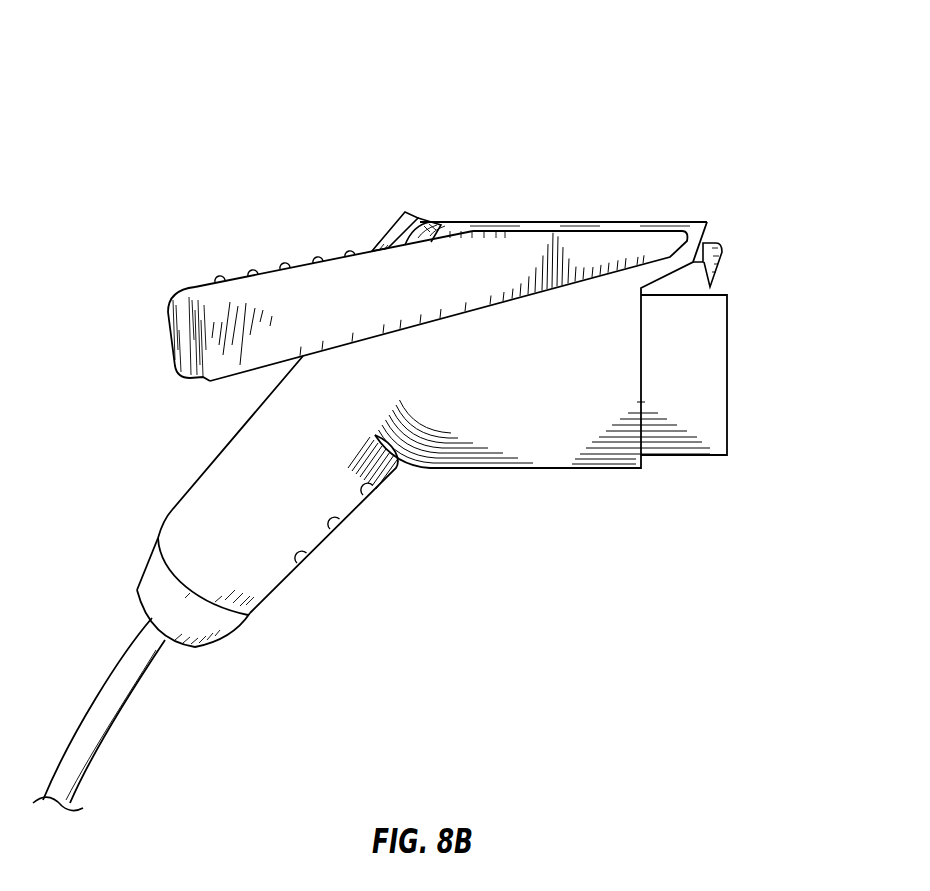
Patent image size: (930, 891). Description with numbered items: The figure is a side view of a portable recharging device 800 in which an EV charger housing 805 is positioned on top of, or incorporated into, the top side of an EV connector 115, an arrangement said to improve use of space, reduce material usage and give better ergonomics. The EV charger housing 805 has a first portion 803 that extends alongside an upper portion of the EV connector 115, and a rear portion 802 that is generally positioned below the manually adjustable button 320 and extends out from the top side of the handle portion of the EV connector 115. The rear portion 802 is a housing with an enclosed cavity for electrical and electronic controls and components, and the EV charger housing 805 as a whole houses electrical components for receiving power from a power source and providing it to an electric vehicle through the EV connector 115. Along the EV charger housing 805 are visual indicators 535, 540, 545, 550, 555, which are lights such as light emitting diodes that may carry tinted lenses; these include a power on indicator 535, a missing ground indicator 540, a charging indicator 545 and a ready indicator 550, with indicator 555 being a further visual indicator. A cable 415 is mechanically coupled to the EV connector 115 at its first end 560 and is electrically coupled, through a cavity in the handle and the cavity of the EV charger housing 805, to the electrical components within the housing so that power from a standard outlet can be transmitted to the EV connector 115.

The portable recharging device 800 is at (189, 61).
The EV connector 115 is at (556, 453).
The manually adjustable button 320 is at (394, 214).
The cable 415 is at (107, 672).
The power on indicator 535 is at (350, 253).
The missing ground indicator 540 is at (320, 264).
The charging indicator 545 is at (287, 262).
The ready indicator 550 is at (253, 278).
The visual indicator 555 is at (221, 274).
The first end 560 is at (162, 643).
The rear portion 802 is at (182, 333).
The first portion 803 is at (634, 246).
The EV charger housing 805 is at (407, 317).